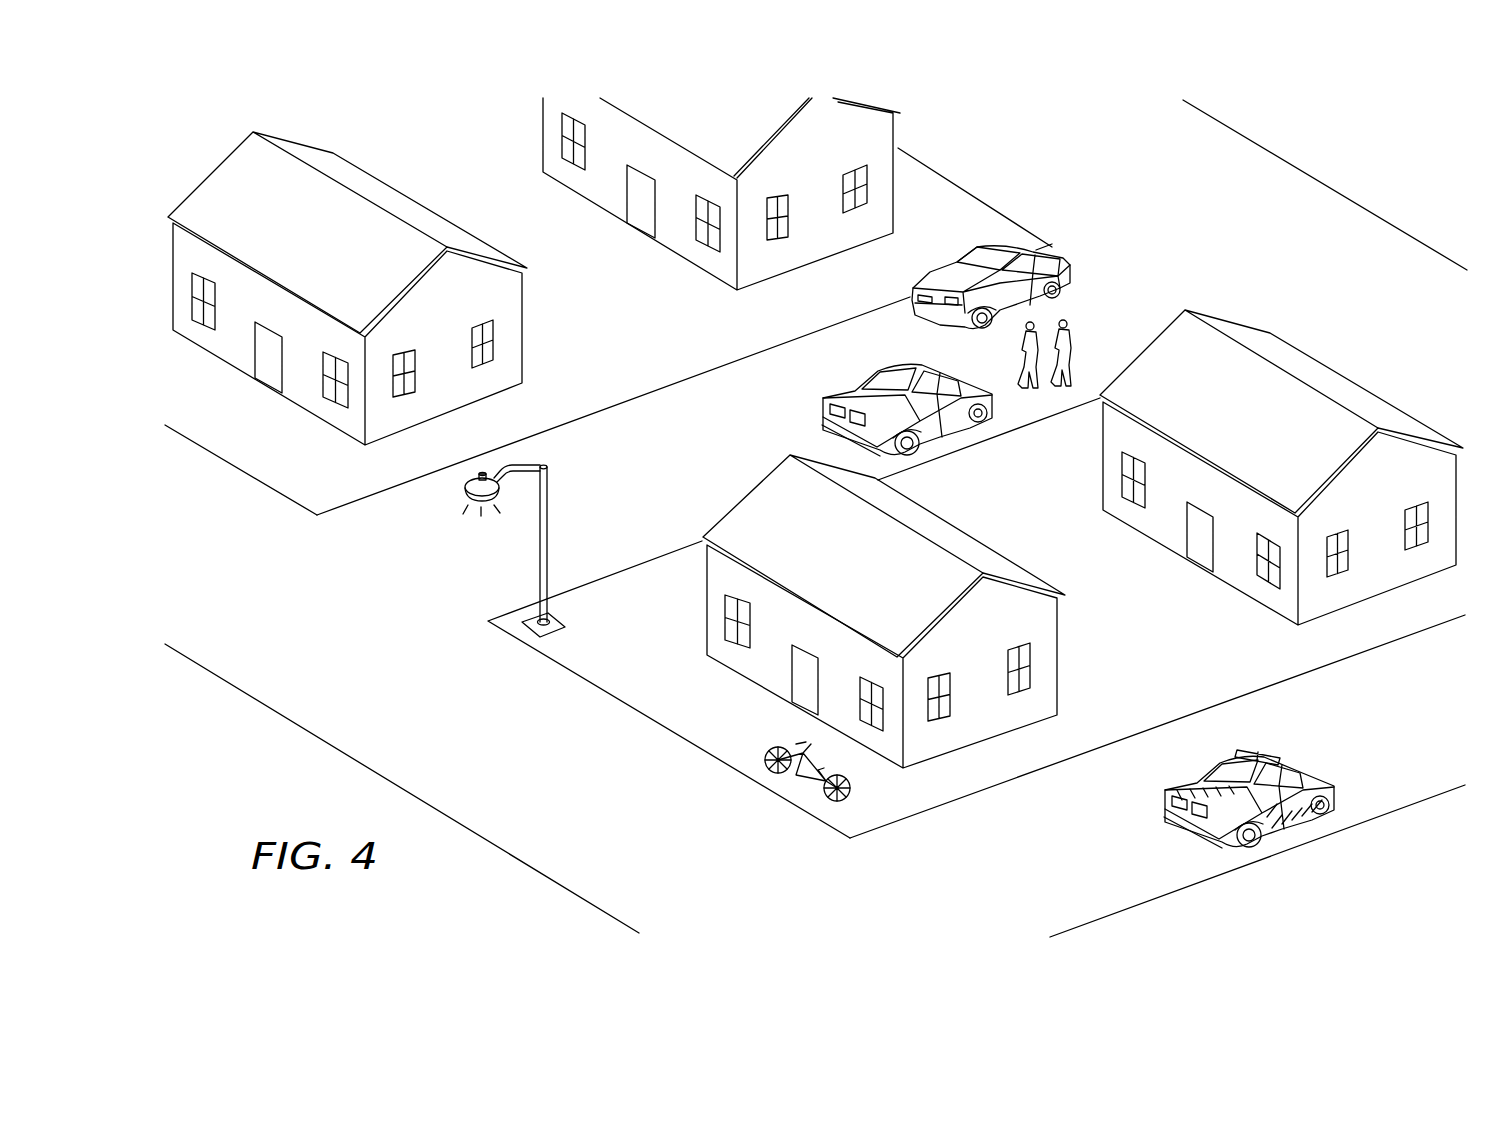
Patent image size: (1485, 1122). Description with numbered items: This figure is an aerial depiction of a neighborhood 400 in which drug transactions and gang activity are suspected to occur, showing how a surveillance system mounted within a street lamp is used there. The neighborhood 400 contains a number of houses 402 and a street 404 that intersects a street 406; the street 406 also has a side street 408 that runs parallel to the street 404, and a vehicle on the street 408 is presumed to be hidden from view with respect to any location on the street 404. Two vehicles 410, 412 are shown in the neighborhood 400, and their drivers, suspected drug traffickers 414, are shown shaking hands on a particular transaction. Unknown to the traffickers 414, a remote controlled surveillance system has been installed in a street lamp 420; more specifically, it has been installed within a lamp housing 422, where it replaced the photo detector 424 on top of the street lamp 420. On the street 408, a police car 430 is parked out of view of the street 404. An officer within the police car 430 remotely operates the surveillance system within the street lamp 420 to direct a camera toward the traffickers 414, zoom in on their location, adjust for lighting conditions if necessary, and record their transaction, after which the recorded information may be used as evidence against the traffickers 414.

The neighborhood 400 is at (1337, 160).
The houses 402 is at (413, 205).
The street 404 is at (702, 461).
The street 406 is at (689, 849).
The side street 408 is at (1397, 732).
The vehicle 410 is at (907, 367).
The vehicle 412 is at (933, 278).
The drug traffickers 414 is at (1087, 328).
The street lamp 420 is at (503, 527).
The lamp housing 422 is at (463, 490).
The photo detector 424 is at (480, 472).
The police car 430 is at (1230, 770).